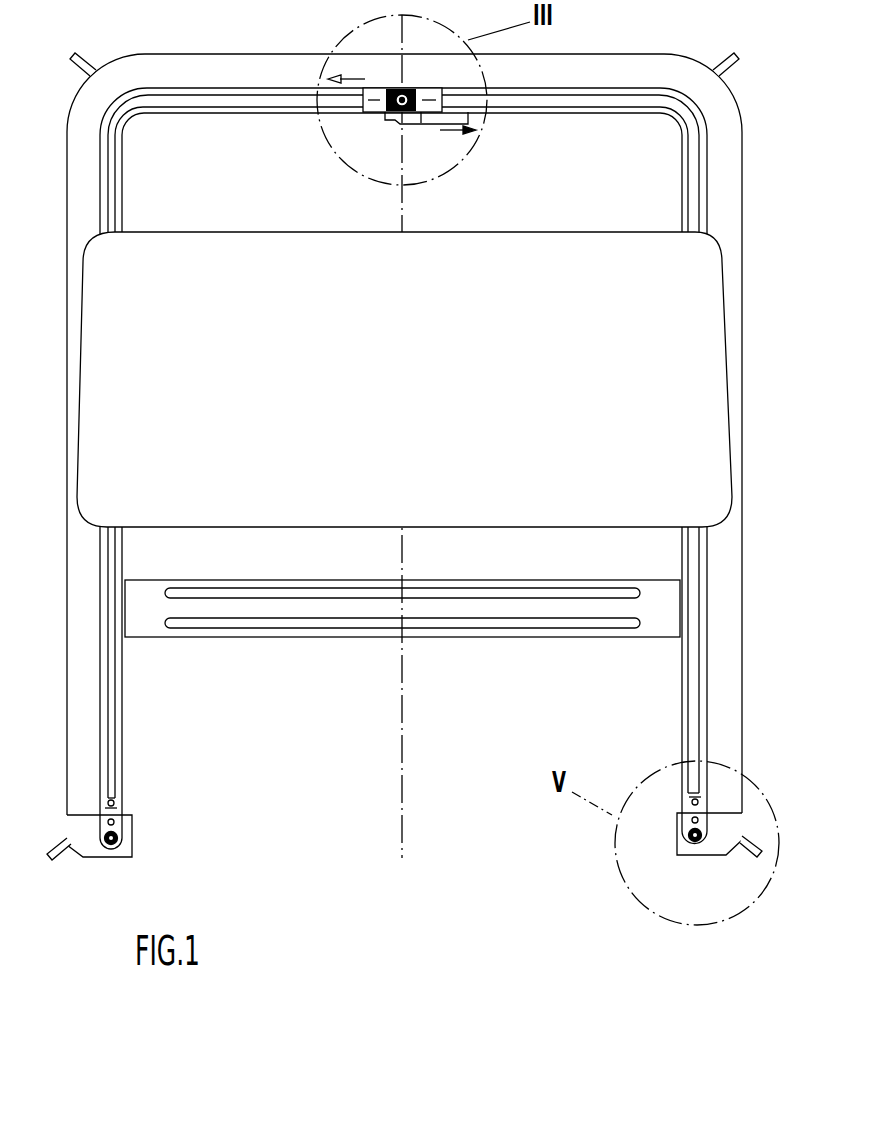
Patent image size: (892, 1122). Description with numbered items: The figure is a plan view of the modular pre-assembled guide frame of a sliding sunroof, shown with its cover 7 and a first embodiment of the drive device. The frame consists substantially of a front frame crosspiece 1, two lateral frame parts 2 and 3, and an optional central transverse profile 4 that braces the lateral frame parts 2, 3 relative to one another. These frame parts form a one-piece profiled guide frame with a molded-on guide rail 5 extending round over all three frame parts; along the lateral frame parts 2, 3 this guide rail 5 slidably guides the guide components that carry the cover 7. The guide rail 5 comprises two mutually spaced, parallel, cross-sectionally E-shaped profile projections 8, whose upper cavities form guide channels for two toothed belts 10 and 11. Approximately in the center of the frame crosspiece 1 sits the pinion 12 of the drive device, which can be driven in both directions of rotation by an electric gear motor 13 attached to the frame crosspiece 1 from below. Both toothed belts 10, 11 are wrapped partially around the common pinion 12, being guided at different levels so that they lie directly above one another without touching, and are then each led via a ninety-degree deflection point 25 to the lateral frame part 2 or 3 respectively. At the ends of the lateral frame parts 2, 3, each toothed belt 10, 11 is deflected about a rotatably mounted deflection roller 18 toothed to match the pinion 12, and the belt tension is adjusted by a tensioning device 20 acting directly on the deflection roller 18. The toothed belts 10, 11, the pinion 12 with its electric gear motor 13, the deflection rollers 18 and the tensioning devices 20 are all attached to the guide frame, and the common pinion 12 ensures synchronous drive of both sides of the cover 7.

The front frame crosspiece 1 is at (224, 72).
The lateral frame part 2 is at (73, 162).
The lateral frame part 3 is at (722, 172).
The central transverse profile 4 is at (304, 607).
The guide rail 5 is at (718, 142).
The cover 7 is at (260, 355).
The profile projection 8 is at (98, 163).
The toothed belt 10 is at (126, 820).
The toothed belt 11 is at (686, 822).
The pinion 12 is at (414, 94).
The electric gear motor 13 is at (434, 122).
The deflection roller 18 is at (120, 838).
The tensioning device 20 is at (117, 801).
The deflection point 25 is at (130, 133).